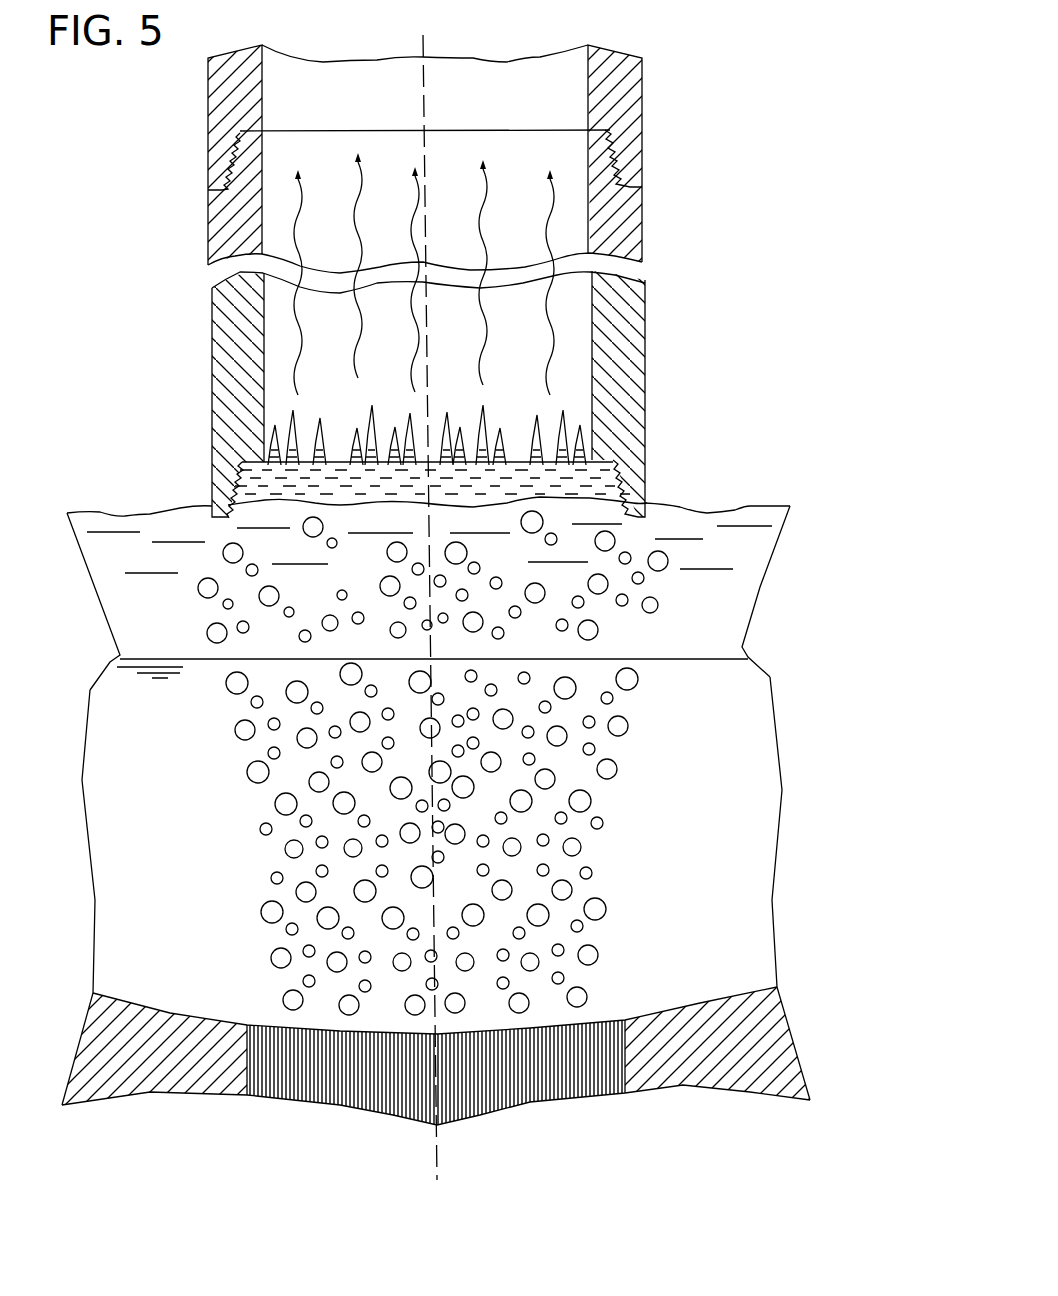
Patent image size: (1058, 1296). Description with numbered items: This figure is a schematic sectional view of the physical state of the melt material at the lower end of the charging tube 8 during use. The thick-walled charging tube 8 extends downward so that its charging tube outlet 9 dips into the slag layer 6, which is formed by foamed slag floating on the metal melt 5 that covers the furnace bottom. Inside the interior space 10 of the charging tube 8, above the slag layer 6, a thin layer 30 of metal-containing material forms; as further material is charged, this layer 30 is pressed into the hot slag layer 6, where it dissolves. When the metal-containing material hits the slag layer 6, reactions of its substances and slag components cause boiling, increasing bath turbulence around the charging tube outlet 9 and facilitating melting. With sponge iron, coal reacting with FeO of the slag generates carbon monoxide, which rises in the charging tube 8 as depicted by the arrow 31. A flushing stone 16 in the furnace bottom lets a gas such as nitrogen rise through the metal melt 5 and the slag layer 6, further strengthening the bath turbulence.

The metal melt 5 is at (700, 802).
The slag layer 6 is at (712, 617).
The charging tube 8 is at (602, 78).
The charging tube outlet 9 is at (238, 346).
The interior space of the charging tube 10 is at (510, 108).
The flushing stone 16 is at (590, 1045).
The layer of metal-containing material 30 is at (563, 490).
The arrow 31 is at (478, 223).